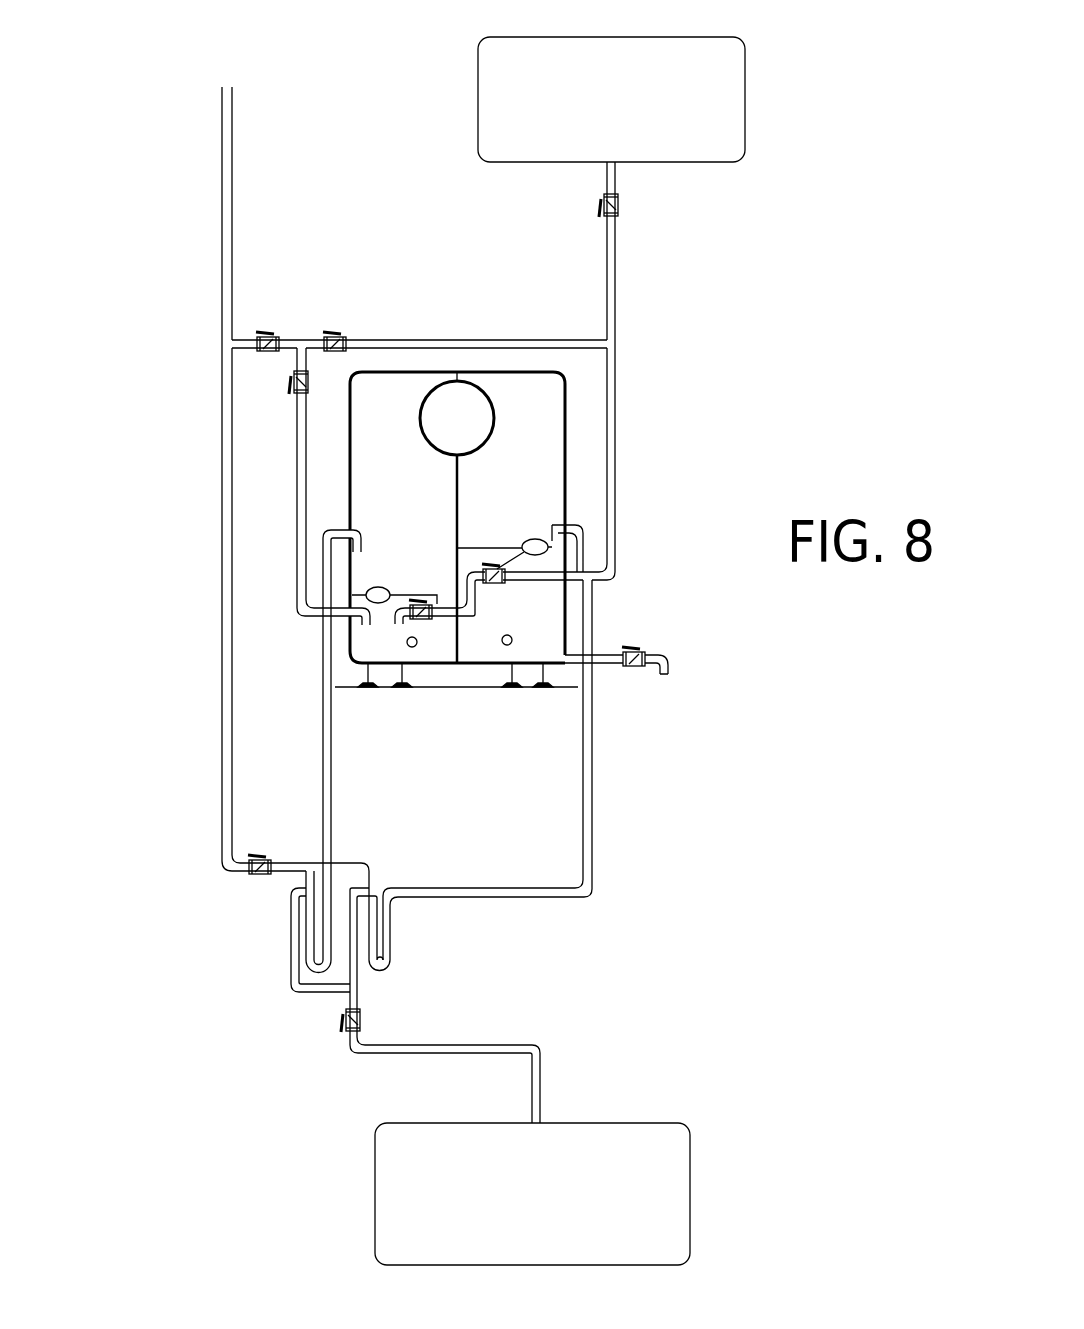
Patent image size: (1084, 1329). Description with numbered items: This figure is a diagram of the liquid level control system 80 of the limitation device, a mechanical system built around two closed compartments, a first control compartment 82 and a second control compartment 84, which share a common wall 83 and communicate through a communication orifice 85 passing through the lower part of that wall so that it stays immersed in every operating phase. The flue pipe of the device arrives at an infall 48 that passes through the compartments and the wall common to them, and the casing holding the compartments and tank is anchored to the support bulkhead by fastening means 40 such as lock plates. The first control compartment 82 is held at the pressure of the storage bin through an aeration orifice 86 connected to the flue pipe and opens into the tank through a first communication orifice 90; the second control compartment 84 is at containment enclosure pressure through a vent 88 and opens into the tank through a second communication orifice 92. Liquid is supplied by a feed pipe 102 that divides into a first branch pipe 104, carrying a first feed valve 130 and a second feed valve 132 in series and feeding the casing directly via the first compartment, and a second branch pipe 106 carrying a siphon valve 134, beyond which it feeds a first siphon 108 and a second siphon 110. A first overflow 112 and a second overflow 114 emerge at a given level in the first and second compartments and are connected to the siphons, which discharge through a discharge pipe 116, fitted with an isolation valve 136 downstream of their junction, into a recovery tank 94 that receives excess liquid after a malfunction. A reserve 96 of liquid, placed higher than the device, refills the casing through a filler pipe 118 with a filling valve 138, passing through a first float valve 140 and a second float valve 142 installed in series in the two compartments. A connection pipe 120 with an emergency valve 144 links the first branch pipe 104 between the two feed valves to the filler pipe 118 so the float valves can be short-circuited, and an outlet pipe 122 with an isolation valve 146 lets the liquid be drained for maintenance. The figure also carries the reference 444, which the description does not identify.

The liquid level control system 80 is at (158, 215).
The feed pipe 102 is at (232, 138).
The first branch pipe 104 is at (240, 340).
The second branch pipe 106 is at (231, 832).
The first siphon 108 is at (320, 975).
The second siphon 110 is at (373, 972).
The first overflow 112 is at (333, 830).
The second overflow 114 is at (590, 830).
The discharge pipe 116 is at (553, 1073).
The filler pipe 118 is at (615, 478).
The connection pipe 120 is at (570, 340).
The outlet pipe 122 is at (598, 665).
The first feed valve 130 is at (278, 337).
The second feed valve 132 is at (293, 382).
The siphon valve 134 is at (262, 873).
The isolation valve 136 is at (360, 1025).
The filling valve 138 is at (618, 212).
The first float valve 140 is at (418, 604).
The second float valve 142 is at (487, 569).
The emergency valve 144 is at (342, 337).
The isolation valve 146 is at (647, 653).
The first control compartment 82 is at (407, 393).
The common wall 83 is at (458, 485).
The second control compartment 84 is at (554, 403).
The communication orifice 85 is at (500, 682).
The aeration orifice 86 is at (406, 421).
The vent 88 is at (527, 388).
The first communication orifice 90 is at (406, 642).
The second communication orifice 92 is at (512, 637).
The recovery tank 94 is at (676, 1150).
The reserve 96 is at (704, 163).
The fastening means 40 is at (380, 676).
The infall 48 is at (488, 392).
The flow direction arrow 444 is at (475, 655).